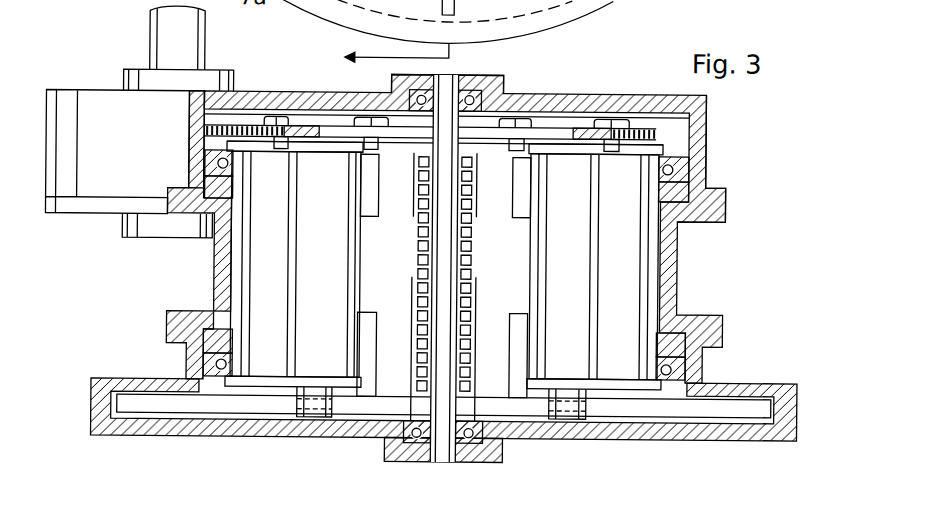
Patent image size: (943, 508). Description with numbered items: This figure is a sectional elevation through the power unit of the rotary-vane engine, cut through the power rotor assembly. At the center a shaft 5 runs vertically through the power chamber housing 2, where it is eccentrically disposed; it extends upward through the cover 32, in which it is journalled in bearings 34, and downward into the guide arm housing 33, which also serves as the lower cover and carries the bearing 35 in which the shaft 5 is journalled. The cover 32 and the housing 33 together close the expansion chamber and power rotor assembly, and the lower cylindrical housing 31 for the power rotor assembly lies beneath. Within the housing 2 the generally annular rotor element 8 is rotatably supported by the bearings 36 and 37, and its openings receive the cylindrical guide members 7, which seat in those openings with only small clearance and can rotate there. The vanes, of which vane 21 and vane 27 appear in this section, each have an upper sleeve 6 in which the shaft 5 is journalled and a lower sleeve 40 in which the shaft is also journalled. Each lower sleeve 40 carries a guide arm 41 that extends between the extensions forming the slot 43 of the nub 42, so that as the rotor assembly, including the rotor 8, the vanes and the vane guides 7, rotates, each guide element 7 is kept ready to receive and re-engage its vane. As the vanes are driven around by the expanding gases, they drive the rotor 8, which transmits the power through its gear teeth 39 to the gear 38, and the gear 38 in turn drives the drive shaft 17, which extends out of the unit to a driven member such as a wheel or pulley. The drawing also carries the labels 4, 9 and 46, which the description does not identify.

The power chamber housing 2 is at (220, 269).
The section line indicator 4 is at (385, 55).
The shaft 5 is at (447, 170).
The upper sleeve 6 is at (465, 185).
The guide member 7 is at (332, 193).
The rotor element 8 is at (242, 202).
The bracket 9 is at (168, 139).
The drive shaft 17 is at (182, 39).
The vane 21 is at (373, 258).
The vane 27 is at (525, 258).
The lower cylindrical housing 31 is at (745, 385).
The cover 32 is at (603, 99).
The guide arm housing 33 is at (100, 410).
The bearings 34 is at (497, 85).
The bearing 35 is at (472, 423).
The bearing 36 is at (688, 161).
The bearing 37 is at (198, 365).
The gear 38 is at (210, 135).
The gear teeth 39 is at (250, 130).
The lower sleeve 40 is at (468, 288).
The guide arm 41 is at (130, 406).
The nub 42 is at (310, 408).
The slot 43 is at (563, 402).
The rack plate 46 is at (280, 128).